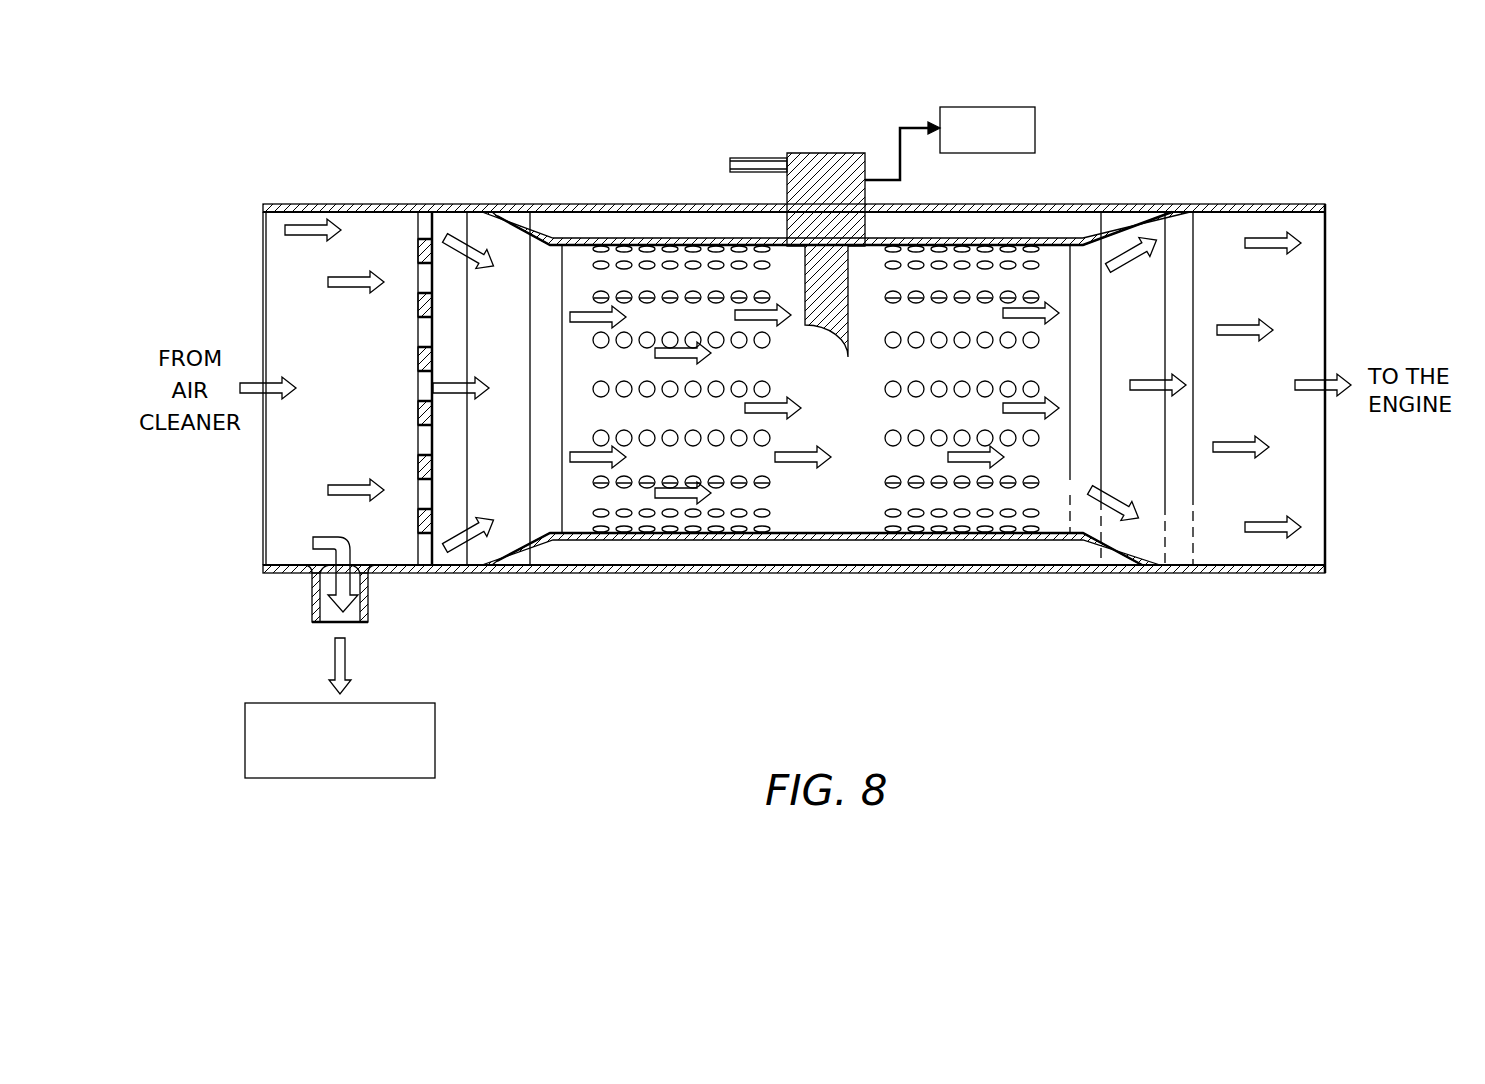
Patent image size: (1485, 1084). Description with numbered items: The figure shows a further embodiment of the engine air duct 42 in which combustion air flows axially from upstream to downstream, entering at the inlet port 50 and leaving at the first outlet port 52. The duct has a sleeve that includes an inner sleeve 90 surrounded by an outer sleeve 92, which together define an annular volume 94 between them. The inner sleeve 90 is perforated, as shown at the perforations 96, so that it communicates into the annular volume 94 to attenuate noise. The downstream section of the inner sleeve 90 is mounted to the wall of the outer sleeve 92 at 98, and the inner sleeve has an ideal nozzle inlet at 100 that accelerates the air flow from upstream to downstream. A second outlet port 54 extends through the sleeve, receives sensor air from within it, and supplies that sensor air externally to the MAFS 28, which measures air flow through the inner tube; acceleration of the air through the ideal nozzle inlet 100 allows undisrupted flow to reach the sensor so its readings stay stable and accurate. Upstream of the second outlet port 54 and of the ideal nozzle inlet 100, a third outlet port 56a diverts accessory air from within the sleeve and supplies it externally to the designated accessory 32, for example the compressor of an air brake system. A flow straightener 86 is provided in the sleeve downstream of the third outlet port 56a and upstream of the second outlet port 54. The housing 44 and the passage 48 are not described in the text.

The MAFS 28 is at (985, 107).
The designated accessory 32 is at (435, 740).
The engine air duct 42 is at (262, 230).
The outer duct housing 44 is at (1030, 205).
The annular passage 48 is at (515, 240).
The inlet port 50 is at (378, 433).
The first outlet port 52 is at (1302, 325).
The second outlet port 54 is at (825, 153).
The third outlet port 56a is at (310, 598).
The flow straightener 86 is at (418, 376).
The inner sleeve 90 is at (600, 263).
The outer sleeve 92 is at (583, 205).
The annular volume 94 is at (655, 225).
The perforations 96 is at (884, 513).
The downstream section mounting 98 is at (1192, 218).
The ideal nozzle inlet 100 is at (545, 250).